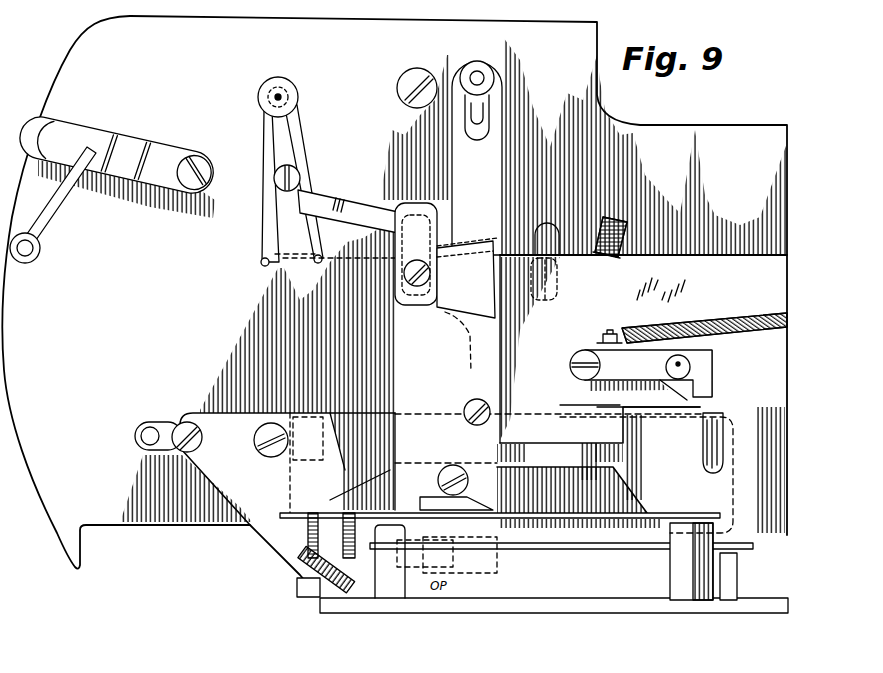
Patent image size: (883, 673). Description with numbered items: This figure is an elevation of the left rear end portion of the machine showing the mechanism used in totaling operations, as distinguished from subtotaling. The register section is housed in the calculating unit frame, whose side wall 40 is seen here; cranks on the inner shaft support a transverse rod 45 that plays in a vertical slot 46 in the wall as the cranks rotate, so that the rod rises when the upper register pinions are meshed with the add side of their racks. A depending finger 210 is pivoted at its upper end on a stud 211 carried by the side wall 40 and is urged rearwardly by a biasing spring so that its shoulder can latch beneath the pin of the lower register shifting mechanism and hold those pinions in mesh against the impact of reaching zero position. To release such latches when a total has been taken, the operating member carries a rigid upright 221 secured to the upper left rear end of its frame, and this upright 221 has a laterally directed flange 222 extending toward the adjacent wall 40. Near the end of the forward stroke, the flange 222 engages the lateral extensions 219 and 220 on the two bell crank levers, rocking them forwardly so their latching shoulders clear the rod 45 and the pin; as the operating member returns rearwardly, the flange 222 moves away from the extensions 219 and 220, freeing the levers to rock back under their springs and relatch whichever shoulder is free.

The side wall 40 is at (95, 48).
The stud 211 is at (416, 69).
The depending finger 210 is at (440, 132).
The rigid upright 221 is at (414, 203).
The laterally directed flange 222 is at (392, 210).
The lateral extension 219 is at (609, 217).
The lateral extension 220 is at (615, 257).
The vertical slot 46 is at (560, 272).
The transverse rod 45 is at (550, 297).